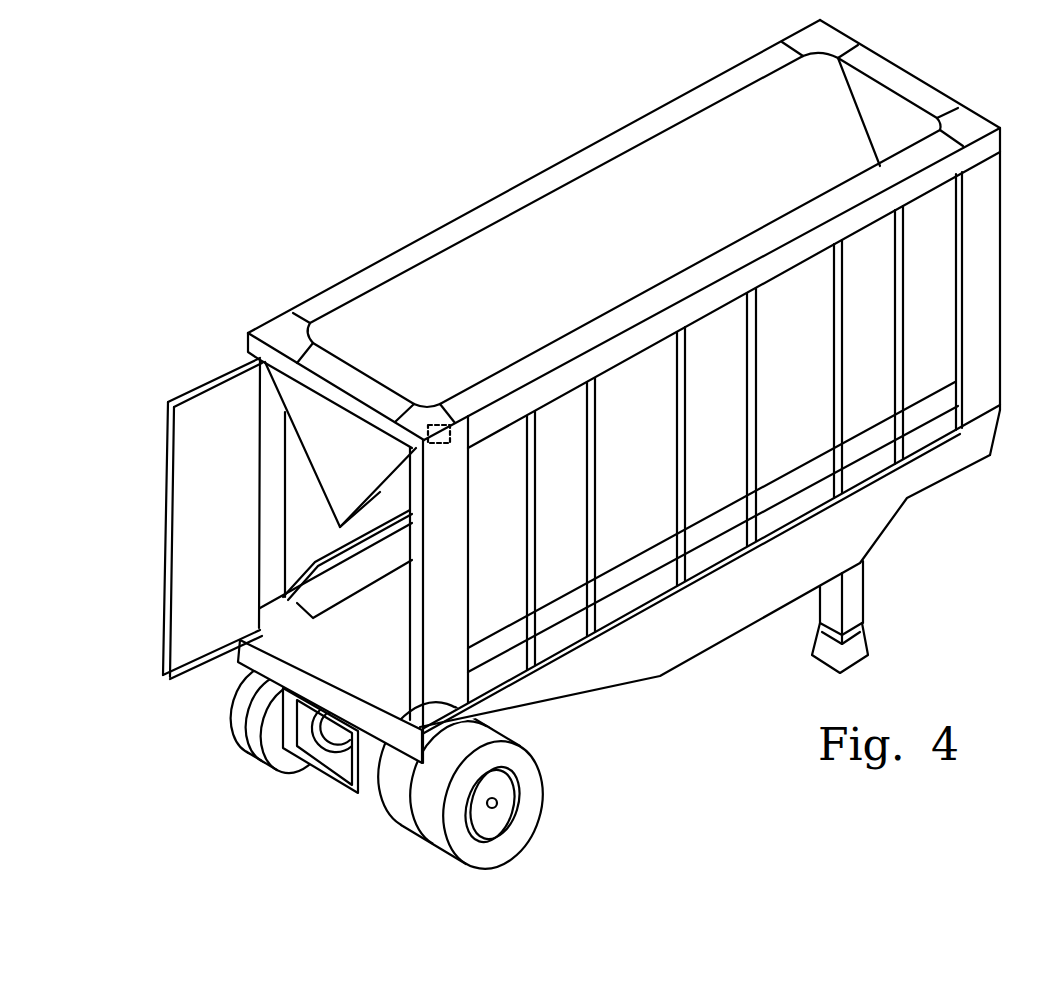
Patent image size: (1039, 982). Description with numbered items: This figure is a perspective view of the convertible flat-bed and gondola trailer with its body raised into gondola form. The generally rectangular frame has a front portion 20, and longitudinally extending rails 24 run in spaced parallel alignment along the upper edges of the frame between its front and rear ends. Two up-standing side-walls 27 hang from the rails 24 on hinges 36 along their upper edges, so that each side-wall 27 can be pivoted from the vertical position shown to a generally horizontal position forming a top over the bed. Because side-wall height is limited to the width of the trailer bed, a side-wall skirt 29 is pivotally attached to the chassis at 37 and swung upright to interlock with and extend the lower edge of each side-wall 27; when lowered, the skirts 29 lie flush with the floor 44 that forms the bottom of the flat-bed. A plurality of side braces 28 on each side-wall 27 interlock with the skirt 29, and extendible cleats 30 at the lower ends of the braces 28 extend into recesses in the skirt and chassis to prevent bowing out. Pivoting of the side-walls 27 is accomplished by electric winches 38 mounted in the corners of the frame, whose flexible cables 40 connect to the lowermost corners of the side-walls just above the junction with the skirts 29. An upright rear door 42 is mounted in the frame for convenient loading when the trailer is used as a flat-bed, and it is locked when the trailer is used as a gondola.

The front portion 20 is at (928, 97).
The longitudinally extending rails 24 is at (735, 290).
The side-wall 27 is at (696, 186).
The side braces 28 is at (588, 490).
The side-wall skirt 29 is at (806, 510).
The extendible cleats 30 is at (592, 636).
The hinges 36 is at (560, 158).
The pivotal attachment of side wall skirts 37 is at (330, 643).
The electric winches 38 is at (444, 400).
The flexible cables 40 is at (380, 492).
The rear door 42 is at (187, 490).
The floor 44 is at (238, 660).